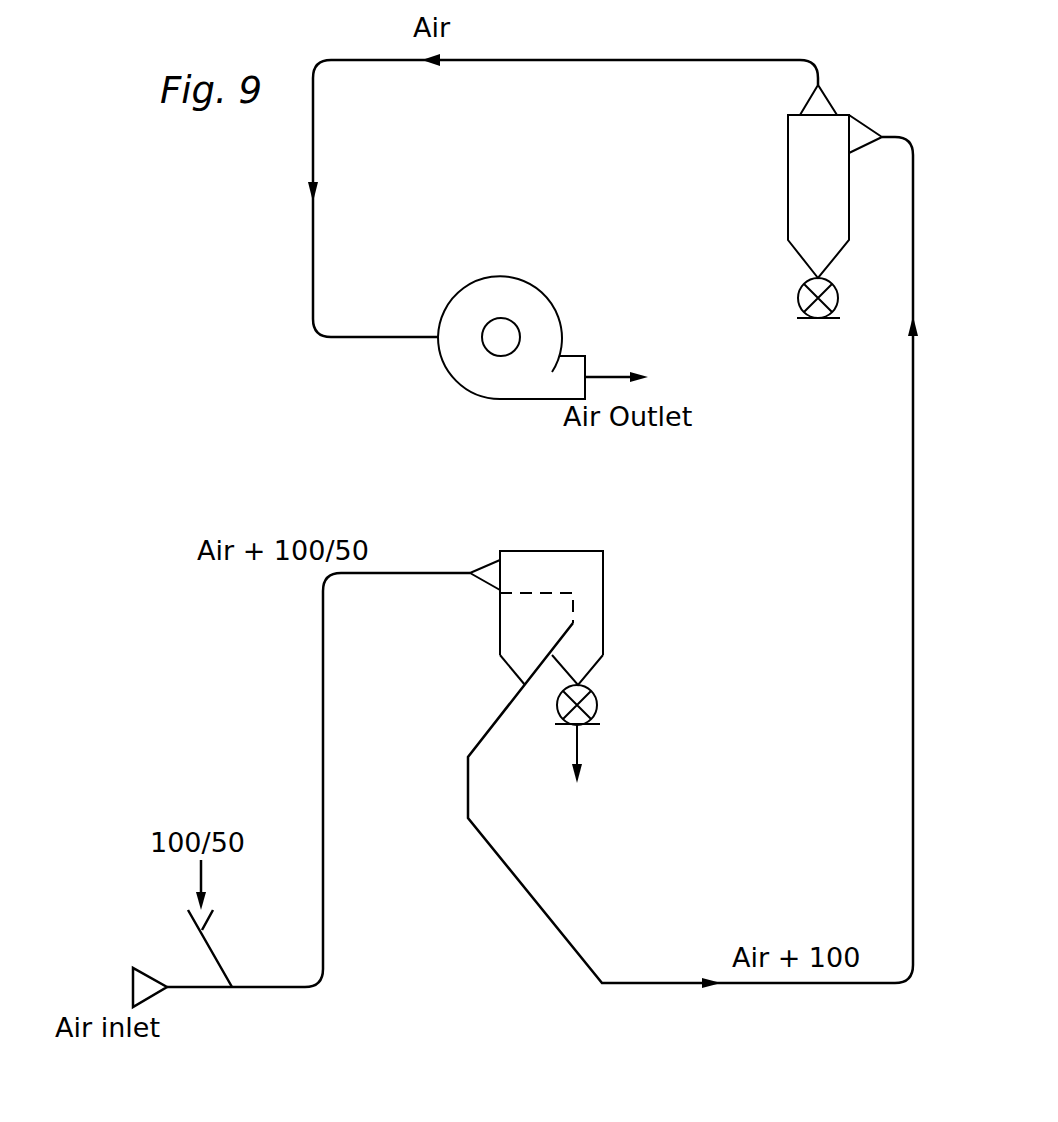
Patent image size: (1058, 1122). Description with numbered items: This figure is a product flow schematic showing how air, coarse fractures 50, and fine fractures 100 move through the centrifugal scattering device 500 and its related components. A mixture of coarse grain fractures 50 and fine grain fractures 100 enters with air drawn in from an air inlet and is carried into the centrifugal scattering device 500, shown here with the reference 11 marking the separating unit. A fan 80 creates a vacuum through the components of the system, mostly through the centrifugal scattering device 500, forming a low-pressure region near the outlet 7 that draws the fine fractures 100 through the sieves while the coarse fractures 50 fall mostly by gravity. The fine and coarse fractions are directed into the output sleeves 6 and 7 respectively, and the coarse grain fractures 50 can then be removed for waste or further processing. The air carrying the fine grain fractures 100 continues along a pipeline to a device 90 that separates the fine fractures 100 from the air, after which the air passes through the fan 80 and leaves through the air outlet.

The device 90 is at (807, 183).
The fine fractures 100 is at (820, 315).
The fan 80 is at (502, 288).
The separator 11 is at (483, 562).
The centrifugal scattering device 500 is at (536, 590).
The output sleeve 6 is at (518, 652).
The output sleeve 7 is at (588, 652).
The coarse fractures 50 is at (606, 734).